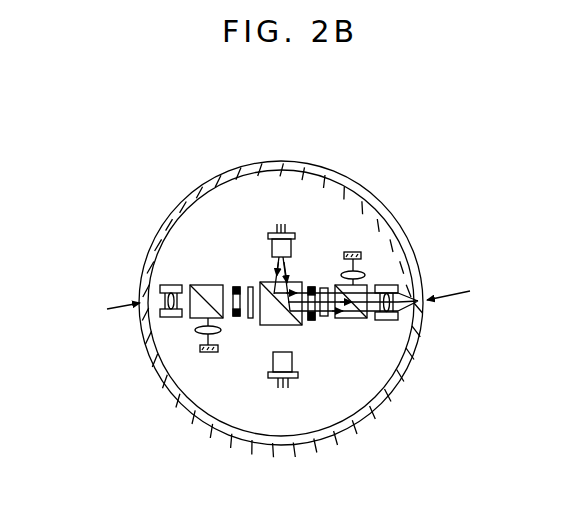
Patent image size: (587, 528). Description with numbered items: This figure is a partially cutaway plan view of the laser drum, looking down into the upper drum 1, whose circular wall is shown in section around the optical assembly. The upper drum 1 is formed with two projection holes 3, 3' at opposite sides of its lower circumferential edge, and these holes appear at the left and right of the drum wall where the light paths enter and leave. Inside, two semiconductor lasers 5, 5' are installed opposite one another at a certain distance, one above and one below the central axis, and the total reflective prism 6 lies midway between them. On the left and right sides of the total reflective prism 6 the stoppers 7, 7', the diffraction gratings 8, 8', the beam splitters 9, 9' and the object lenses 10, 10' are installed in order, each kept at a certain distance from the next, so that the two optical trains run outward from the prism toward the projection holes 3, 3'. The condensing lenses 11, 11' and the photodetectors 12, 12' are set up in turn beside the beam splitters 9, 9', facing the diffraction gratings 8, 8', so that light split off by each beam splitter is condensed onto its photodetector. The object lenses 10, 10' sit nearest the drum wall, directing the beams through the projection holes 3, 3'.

The upper drum 1 is at (175, 201).
The projection hole 3 is at (113, 315).
The projection hole 3' is at (459, 293).
The semiconductor laser 5 is at (288, 207).
The semiconductor laser 5' is at (272, 416).
The total reflective prism 6 is at (267, 326).
The stopper 7 is at (333, 382).
The stopper 7' is at (243, 211).
The diffraction grating 8 is at (362, 368).
The diffraction grating 8' is at (213, 220).
The beam splitter 9 is at (390, 341).
The beam splitter 9' is at (167, 263).
The object lens 10 is at (426, 268).
The object lens 10' is at (136, 327).
The condensing lens 11 is at (393, 228).
The condensing lens 11' is at (169, 368).
The photodetector 12 is at (372, 195).
The photodetector 12' is at (190, 402).